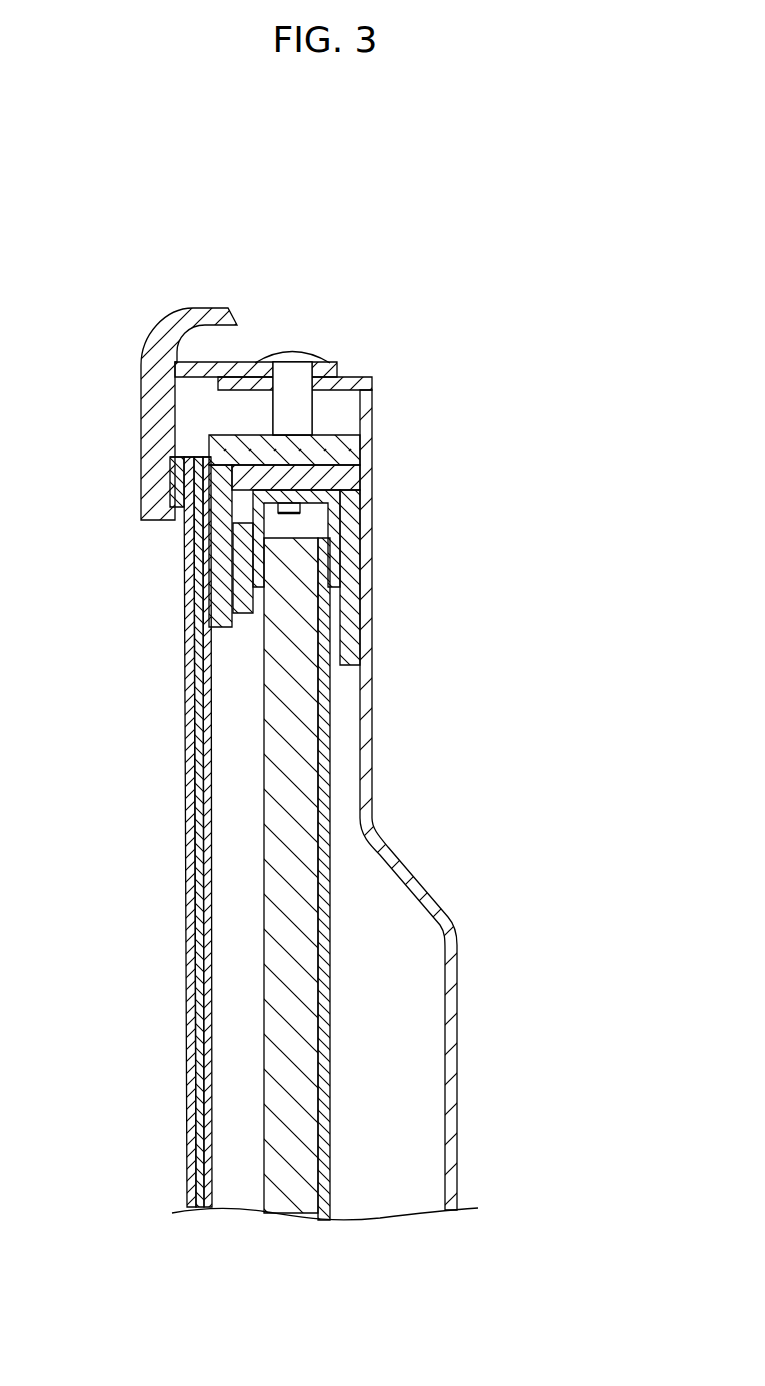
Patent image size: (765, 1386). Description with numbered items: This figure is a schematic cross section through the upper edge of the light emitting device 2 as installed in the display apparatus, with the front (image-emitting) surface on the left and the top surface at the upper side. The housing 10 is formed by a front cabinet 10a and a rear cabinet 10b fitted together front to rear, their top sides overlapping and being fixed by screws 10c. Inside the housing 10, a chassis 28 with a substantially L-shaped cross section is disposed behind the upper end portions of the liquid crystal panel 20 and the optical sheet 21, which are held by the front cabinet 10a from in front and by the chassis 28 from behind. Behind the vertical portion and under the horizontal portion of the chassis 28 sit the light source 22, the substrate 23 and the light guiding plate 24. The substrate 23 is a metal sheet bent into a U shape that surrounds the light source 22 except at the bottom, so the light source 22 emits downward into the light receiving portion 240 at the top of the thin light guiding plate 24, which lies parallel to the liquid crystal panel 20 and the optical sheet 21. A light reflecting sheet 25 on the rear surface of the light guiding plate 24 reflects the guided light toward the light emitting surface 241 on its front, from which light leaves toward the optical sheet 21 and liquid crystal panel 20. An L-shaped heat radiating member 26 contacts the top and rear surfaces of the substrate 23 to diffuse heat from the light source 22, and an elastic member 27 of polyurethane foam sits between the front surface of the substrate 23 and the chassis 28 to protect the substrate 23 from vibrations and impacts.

The light emitting device 2 is at (477, 325).
The housing 10 is at (187, 206).
The front cabinet 10a is at (190, 314).
The rear cabinet 10b is at (380, 388).
The screw 10c is at (292, 352).
The liquid crystal panel 20 is at (190, 962).
The optical sheet 21 is at (210, 1083).
The light source 22 is at (300, 510).
The substrate 23 is at (338, 547).
The light guiding plate 24 is at (298, 643).
The light receiving portion 240 is at (278, 538).
The light emitting surface 241 is at (262, 738).
The light reflecting sheet 25 is at (323, 855).
The heat radiating member 26 is at (360, 478).
The elastic member 27 is at (243, 613).
The chassis 28 is at (347, 450).